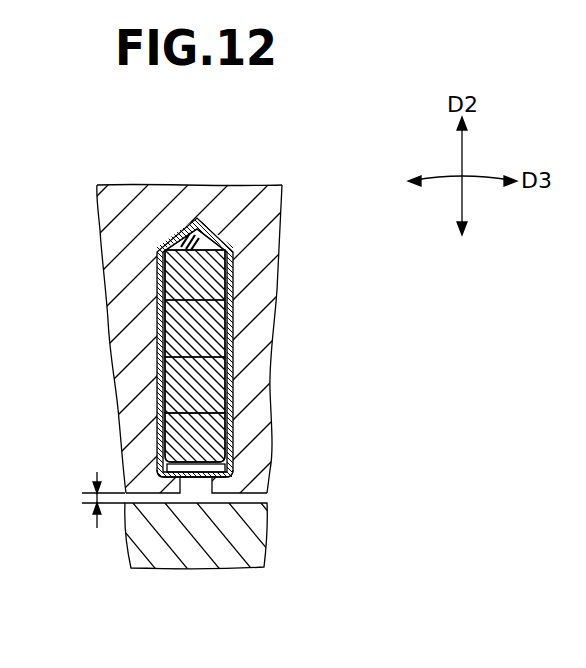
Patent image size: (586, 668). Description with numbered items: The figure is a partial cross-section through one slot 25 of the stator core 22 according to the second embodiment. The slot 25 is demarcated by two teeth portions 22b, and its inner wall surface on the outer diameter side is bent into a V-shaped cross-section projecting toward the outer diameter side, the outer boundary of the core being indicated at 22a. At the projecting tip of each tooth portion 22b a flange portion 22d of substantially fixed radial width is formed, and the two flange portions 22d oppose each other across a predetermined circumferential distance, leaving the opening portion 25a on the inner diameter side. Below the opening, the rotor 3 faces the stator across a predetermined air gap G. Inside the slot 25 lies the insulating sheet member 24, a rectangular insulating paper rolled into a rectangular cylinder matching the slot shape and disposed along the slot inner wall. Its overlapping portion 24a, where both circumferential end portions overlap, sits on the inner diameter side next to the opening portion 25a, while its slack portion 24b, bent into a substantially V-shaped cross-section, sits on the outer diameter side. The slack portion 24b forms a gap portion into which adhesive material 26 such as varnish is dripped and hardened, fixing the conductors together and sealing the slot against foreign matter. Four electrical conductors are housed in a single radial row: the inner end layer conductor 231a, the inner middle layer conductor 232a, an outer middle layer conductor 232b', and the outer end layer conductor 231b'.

The stator core 22 is at (293, 363).
The housing top surface 22a is at (232, 193).
The teeth portions 22b is at (130, 418).
The flange portion 22d is at (170, 487).
The insulating sheet member 24 is at (135, 386).
The overlapping portion 24a is at (212, 483).
The slack portion 24b is at (177, 232).
The slot 25 is at (220, 351).
The opening portion 25a is at (193, 472).
The adhesive material 26 is at (180, 243).
The electrical conductor of the inner end layer 231a is at (205, 432).
The electrical conductor of the outer end layer 231b' is at (271, 275).
The electrical conductor of the inner middle layer 232a is at (205, 378).
The second core segment tip 232b' is at (267, 328).
The rotor 3 is at (127, 545).
The air gap G is at (95, 497).